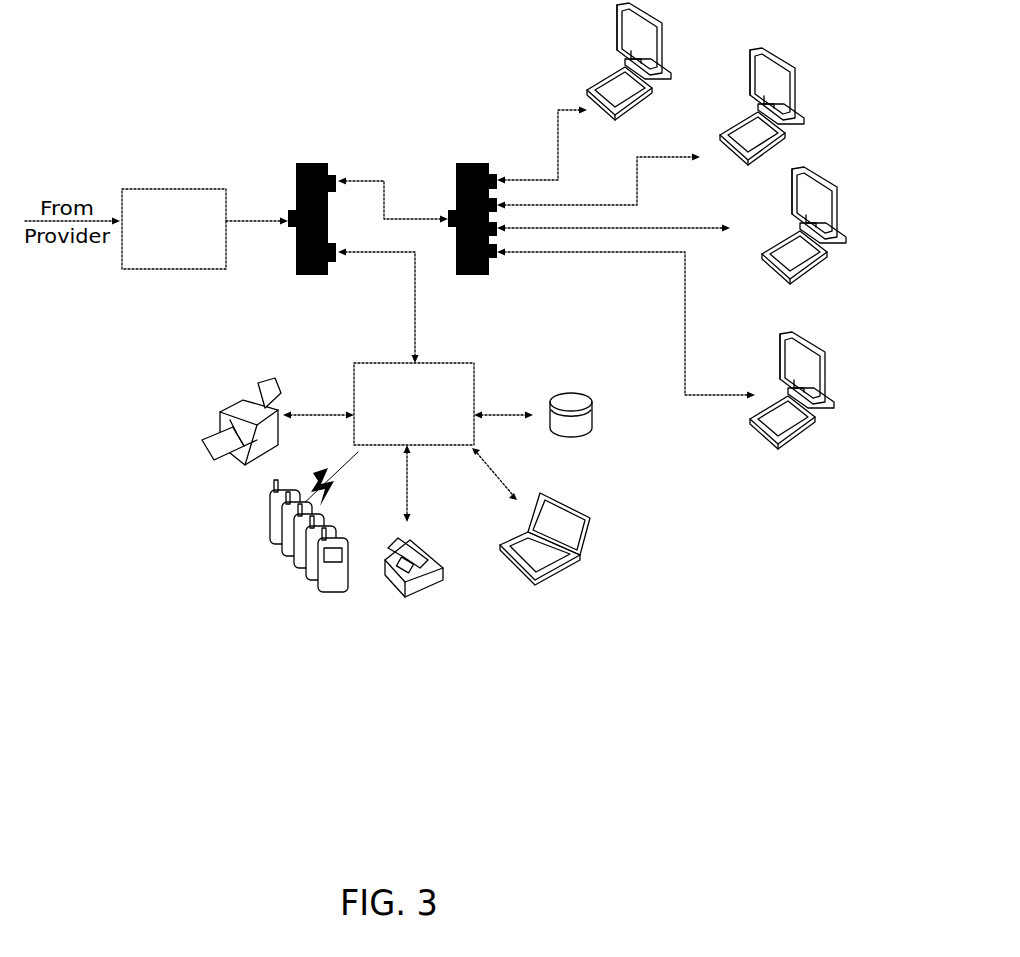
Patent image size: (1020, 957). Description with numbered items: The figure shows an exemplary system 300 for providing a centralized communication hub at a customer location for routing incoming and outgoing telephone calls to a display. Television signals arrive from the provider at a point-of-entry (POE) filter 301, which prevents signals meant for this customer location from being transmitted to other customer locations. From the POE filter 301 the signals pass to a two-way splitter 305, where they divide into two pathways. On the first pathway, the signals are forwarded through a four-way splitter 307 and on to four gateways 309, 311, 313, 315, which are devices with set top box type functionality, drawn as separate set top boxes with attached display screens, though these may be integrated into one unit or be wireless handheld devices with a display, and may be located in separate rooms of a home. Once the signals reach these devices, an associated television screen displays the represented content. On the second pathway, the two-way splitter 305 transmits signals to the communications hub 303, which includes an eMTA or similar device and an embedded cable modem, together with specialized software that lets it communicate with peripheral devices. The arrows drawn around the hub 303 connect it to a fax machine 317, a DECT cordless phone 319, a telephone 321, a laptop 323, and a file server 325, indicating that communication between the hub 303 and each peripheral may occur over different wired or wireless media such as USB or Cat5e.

The system 300 is at (196, 129).
The point-of-entry (POE) filter 301 is at (174, 229).
The communications hub 303 is at (414, 404).
The two-way splitter 305 is at (312, 205).
The four-way splitter 307 is at (472, 205).
The gateway 309 is at (629, 77).
The gateway 311 is at (762, 123).
The gateway 313 is at (804, 237).
The gateway 315 is at (792, 403).
The fax machine 317 is at (229, 431).
The digital enhanced cordless telecommunications (DECT) phone 319 is at (301, 541).
The telephone 321 is at (414, 582).
The laptop 323 is at (545, 555).
The file server 325 is at (571, 429).